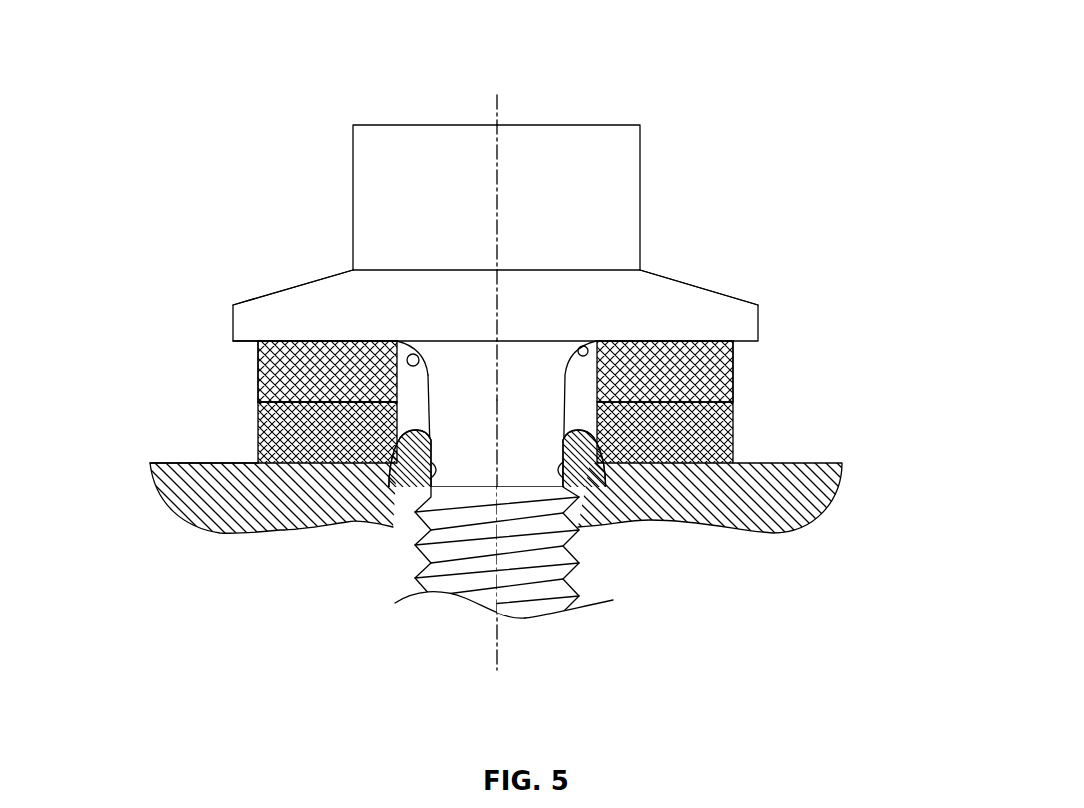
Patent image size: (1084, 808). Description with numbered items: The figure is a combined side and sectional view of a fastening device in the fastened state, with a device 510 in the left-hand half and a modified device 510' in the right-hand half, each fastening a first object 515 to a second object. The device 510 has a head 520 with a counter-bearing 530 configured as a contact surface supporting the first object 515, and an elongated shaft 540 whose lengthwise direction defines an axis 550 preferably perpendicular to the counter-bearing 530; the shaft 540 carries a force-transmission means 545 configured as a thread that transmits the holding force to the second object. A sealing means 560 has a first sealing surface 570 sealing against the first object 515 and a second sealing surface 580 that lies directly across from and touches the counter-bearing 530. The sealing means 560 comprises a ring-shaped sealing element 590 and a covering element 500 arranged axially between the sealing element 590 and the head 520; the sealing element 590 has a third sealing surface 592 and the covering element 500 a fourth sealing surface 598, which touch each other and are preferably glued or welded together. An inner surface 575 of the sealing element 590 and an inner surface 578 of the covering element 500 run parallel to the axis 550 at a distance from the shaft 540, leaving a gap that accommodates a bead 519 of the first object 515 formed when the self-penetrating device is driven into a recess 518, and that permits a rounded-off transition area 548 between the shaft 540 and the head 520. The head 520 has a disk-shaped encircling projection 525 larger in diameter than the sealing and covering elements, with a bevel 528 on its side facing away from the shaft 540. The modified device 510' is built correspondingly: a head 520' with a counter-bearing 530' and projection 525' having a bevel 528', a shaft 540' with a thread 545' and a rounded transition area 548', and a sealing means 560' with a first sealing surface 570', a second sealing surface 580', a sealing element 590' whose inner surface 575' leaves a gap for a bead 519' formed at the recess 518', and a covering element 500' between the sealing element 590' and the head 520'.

The device 510 is at (375, 346).
The modified device 510' is at (704, 360).
The first object 515 is at (190, 505).
The recess 518 is at (395, 526).
The recess 518' is at (526, 589).
The bead 519 is at (357, 257).
The bead 519' is at (649, 270).
The head 520 is at (413, 173).
The head 520' is at (568, 170).
The projection 525 is at (365, 224).
The projection 525' is at (674, 305).
The bevel 528 is at (256, 284).
The bevel 528' is at (746, 274).
The counter-bearing 530 is at (209, 371).
The counter-bearing 530' is at (787, 371).
The shaft 540 is at (438, 574).
The shaft 540' is at (558, 581).
The force-transmission means 545 is at (455, 635).
The force-transmission means 545' is at (603, 598).
The transition area 548 is at (462, 270).
The transition area 548' is at (574, 265).
The axis 550 is at (540, 205).
The sealing means 560 is at (341, 346).
The sealing means 560' is at (714, 380).
The first sealing surface 570 is at (213, 532).
The first sealing surface 570' is at (710, 524).
The inner surface 575 is at (370, 528).
The inner surface 575' is at (609, 507).
The inner surface 578 is at (400, 341).
The second sealing surface 580 is at (278, 323).
The second sealing surface 580' is at (697, 265).
The sealing element 590 is at (288, 432).
The sealing element 590' is at (705, 432).
The third sealing surface 592 is at (313, 307).
The fourth sealing surface 598 is at (345, 405).
The covering element 500 is at (288, 379).
The covering element 500' is at (712, 373).